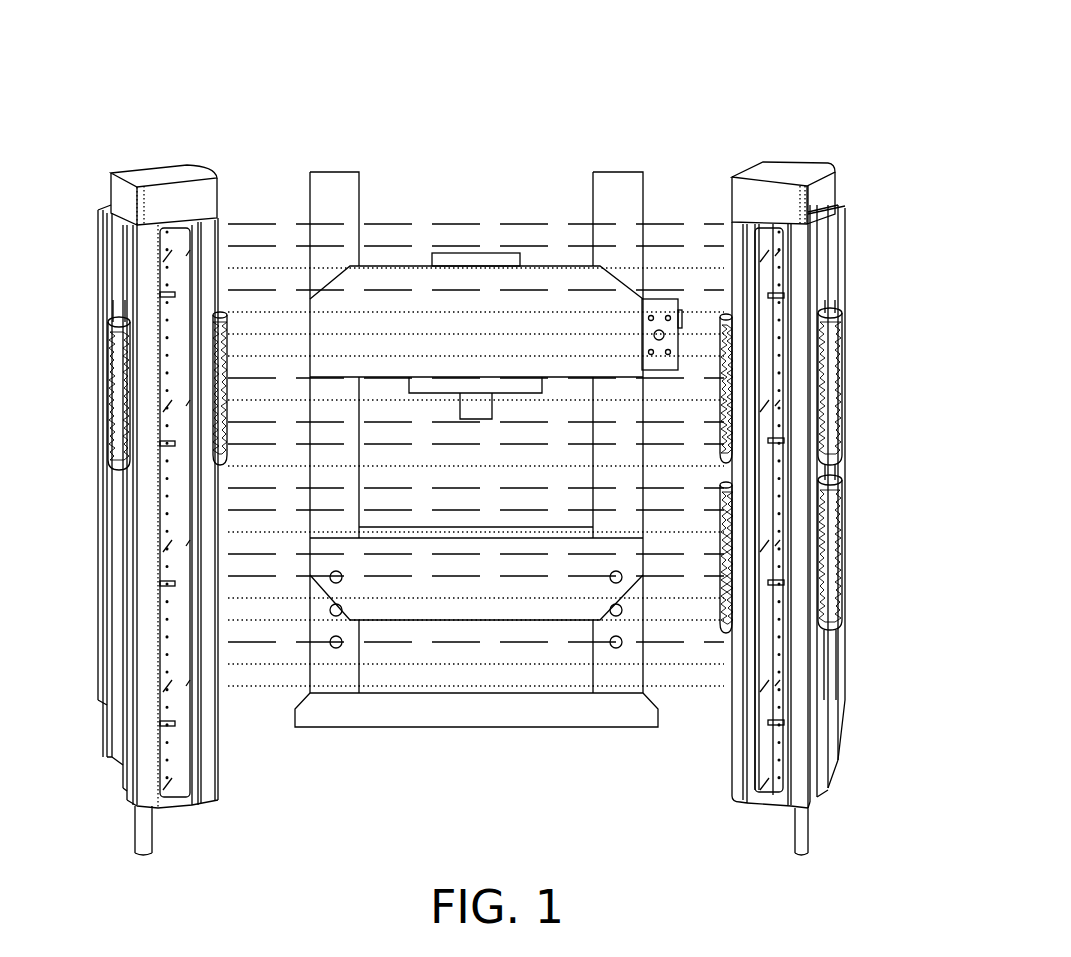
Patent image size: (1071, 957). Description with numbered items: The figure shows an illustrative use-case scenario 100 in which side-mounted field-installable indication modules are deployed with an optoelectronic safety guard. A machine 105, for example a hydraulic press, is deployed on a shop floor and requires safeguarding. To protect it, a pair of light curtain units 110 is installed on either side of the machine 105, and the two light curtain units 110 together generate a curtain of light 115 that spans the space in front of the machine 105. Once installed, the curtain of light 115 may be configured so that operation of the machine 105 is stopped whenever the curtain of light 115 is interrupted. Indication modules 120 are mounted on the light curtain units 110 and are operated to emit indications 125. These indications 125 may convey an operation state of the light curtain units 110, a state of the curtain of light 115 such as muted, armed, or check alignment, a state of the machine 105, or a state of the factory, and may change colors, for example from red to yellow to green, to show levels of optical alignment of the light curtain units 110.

The exemplary scenario 100 is at (186, 58).
The machine 105 is at (345, 172).
The curtain of light 115 is at (484, 228).
The light curtain unit 110 is at (842, 272).
The side-mounted field-installable indication module 120 is at (843, 326).
The indication 125 is at (833, 390).